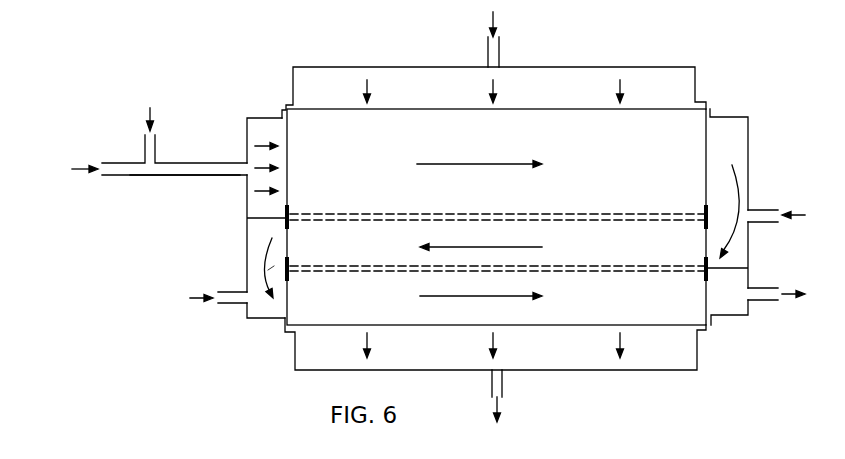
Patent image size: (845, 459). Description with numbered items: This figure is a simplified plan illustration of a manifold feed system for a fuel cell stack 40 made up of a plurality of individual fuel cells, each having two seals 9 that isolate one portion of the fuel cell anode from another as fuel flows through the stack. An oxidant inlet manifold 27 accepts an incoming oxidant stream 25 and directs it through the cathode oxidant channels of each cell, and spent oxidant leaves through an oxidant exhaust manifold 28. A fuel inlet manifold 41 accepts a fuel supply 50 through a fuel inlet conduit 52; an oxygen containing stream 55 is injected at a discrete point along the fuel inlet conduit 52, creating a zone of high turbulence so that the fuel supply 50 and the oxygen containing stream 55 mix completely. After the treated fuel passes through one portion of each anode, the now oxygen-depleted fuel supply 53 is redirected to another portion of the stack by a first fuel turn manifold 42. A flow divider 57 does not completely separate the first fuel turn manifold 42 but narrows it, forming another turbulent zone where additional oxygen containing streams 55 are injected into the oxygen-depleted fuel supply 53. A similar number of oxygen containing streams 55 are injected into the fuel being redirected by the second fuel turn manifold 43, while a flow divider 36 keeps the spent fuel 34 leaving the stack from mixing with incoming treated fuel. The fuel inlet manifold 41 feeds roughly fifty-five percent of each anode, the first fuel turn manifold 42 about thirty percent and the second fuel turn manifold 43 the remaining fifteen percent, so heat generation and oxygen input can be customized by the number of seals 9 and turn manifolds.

The seals 9 is at (647, 222).
The oxidant stream 25 is at (493, 21).
The oxidant inlet manifold 27 is at (661, 78).
The oxidant exhaust manifold 28 is at (650, 353).
The spent fuel 34 is at (792, 297).
The flow divider 36 is at (268, 217).
The fuel cell stack 40 is at (655, 153).
The fuel inlet manifold 41 is at (257, 128).
The first fuel turn manifold 42 is at (730, 113).
The second fuel turn manifold 43 is at (267, 308).
The fuel supply 50 is at (82, 169).
The fuel inlet conduit 52 is at (199, 175).
The oxygen-depleted fuel supply 53 is at (260, 258).
The oxygen containing stream 55 is at (150, 113).
The flow divider 57 is at (272, 271).